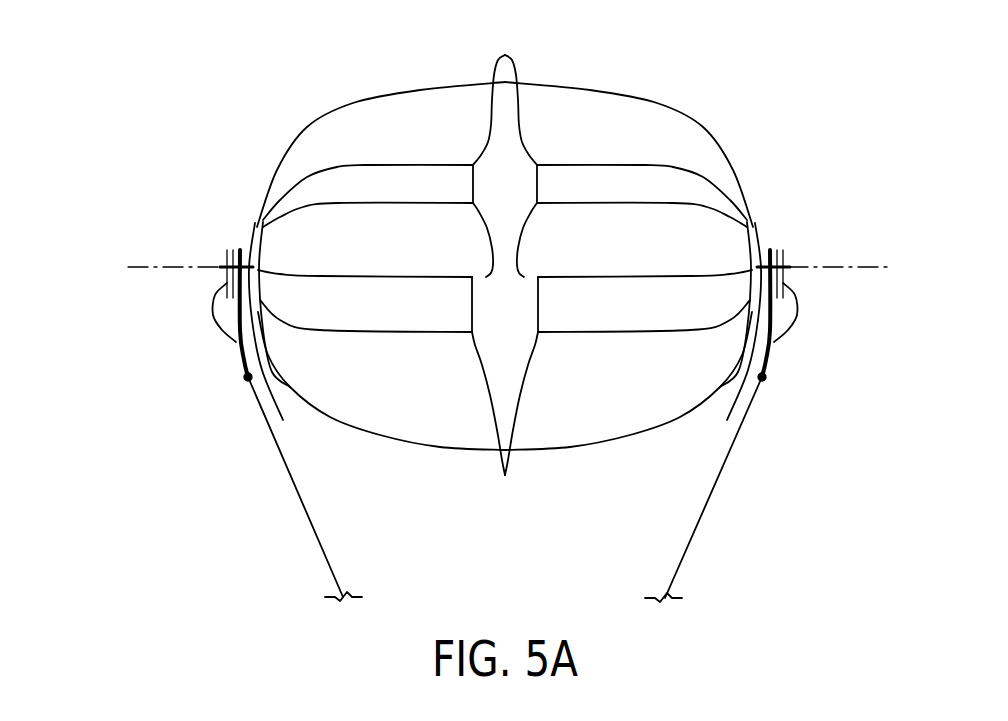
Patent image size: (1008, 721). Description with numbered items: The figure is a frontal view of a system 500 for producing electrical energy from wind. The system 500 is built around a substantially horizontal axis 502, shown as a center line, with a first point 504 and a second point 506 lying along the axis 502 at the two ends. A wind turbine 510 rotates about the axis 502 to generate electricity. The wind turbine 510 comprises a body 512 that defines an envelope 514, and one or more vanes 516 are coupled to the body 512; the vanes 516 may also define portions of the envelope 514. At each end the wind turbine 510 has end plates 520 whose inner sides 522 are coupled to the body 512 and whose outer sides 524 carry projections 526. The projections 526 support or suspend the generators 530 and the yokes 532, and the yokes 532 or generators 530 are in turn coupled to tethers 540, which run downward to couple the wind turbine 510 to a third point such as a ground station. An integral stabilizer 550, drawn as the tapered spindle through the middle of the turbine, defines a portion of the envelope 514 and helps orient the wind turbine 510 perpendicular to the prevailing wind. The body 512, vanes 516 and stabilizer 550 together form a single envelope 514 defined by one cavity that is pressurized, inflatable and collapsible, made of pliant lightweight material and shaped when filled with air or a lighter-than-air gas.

The system 500 is at (115, 35).
The substantially horizontal axis 502 is at (150, 266).
The first point 504 is at (228, 245).
The second point 506 is at (762, 245).
The wind turbine 510 is at (528, 522).
The body 512 is at (440, 335).
The envelope 514 is at (582, 312).
The vanes 516 is at (410, 203).
The end plates 520 is at (240, 243).
The inner sides 522 is at (263, 247).
The outer sides 524 is at (283, 420).
The projections 526 is at (225, 266).
The generators 530 is at (225, 333).
The yokes 532 is at (240, 364).
The tethers 540 is at (310, 522).
The integral stabilizer 550 is at (503, 470).